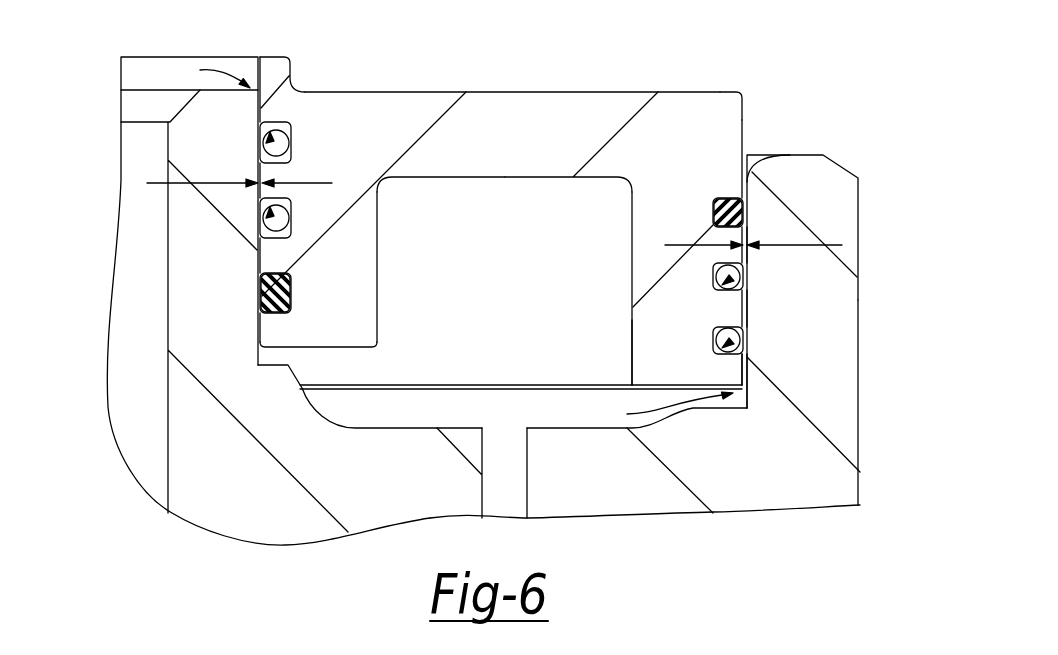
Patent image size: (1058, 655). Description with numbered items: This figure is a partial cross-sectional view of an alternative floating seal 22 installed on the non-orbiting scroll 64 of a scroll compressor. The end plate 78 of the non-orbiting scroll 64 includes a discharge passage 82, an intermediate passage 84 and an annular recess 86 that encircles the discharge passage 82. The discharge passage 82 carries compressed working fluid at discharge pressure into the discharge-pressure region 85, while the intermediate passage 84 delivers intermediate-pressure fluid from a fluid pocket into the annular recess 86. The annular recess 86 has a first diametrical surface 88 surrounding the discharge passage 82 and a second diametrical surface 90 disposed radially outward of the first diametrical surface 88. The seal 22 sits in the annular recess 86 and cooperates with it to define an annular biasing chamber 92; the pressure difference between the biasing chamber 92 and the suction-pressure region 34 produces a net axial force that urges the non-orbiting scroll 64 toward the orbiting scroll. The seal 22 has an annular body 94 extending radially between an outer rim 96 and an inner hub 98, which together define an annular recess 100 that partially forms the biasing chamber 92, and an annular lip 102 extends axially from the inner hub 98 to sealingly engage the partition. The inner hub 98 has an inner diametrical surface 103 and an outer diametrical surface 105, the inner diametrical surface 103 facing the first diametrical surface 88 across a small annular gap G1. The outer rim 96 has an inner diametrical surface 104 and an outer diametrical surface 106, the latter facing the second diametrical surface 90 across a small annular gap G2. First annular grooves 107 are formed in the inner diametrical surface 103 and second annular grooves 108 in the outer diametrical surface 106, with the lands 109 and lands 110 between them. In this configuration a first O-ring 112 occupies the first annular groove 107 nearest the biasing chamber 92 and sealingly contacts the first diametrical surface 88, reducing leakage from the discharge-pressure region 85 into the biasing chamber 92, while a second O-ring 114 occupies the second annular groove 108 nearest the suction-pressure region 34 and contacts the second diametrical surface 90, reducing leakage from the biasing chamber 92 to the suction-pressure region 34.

The seal 22 is at (693, 84).
The suction-pressure region 34 is at (795, 135).
The non-orbiting scroll 64 is at (866, 313).
The end plate 78 is at (830, 414).
The discharge passage 82 is at (155, 150).
The intermediate passage 84 is at (527, 500).
The discharge-pressure region 85 is at (137, 75).
The annular recess 86 is at (398, 418).
The first diametrical surface 88 is at (270, 263).
The second diametrical surface 90 is at (650, 291).
The biasing chamber 92 is at (558, 190).
The annular body 94 is at (495, 105).
The outer rim 96 is at (652, 352).
The inner hub 98 is at (365, 322).
The annular recess 100 is at (448, 190).
The annular lip 102 is at (273, 58).
The inner diametrical surface 103 is at (257, 101).
The inner diametrical surface 104 is at (632, 233).
The outer diametrical surface 105 is at (378, 228).
The outer diametrical surface 106 is at (743, 105).
The first annular grooves 107 is at (290, 153).
The second annular grooves 108 is at (745, 206).
The first lands 109 is at (268, 255).
The second lands 110 is at (747, 237).
The first O-ring 112 is at (267, 300).
The second O-ring 114 is at (730, 200).
The annular gap G1 is at (255, 182).
The annular gap G2 is at (740, 244).